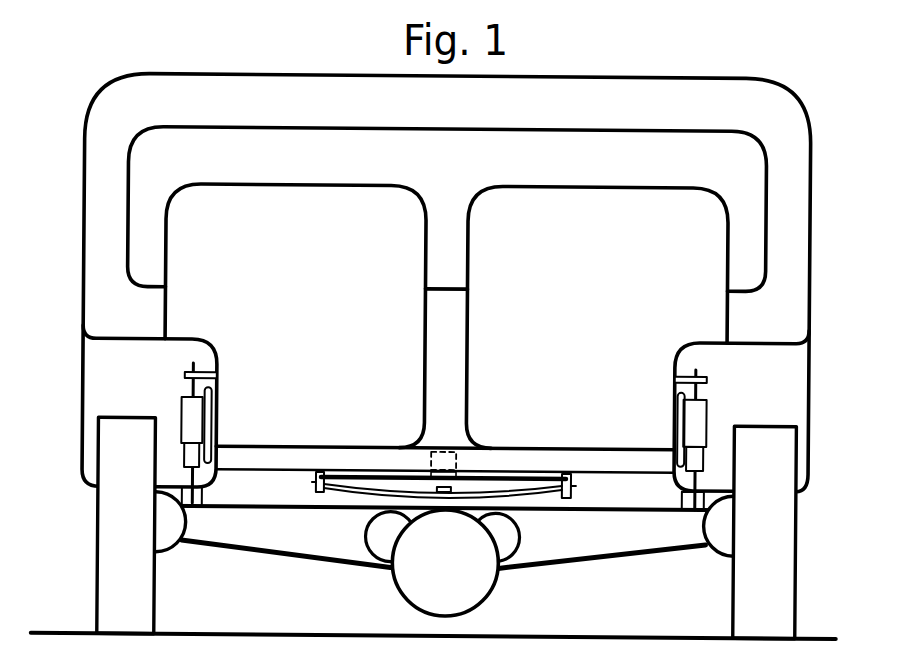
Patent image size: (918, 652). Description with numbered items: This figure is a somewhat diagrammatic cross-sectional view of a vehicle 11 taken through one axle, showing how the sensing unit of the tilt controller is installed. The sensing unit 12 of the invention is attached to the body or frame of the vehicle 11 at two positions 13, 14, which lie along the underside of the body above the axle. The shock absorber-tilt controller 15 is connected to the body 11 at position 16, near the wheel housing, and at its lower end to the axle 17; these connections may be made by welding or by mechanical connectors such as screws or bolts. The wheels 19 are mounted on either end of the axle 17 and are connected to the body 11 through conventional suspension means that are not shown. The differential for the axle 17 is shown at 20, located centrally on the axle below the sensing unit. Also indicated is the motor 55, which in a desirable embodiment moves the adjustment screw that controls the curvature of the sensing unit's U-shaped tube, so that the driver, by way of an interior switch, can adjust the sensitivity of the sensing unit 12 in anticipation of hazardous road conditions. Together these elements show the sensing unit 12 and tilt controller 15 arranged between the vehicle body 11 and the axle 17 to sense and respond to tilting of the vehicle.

The vehicle 11 is at (503, 463).
The sensing unit 12 is at (530, 485).
The position 13 is at (327, 474).
The position 14 is at (536, 479).
The shock absorber-tilt controller 15 is at (182, 413).
The position 16 is at (210, 359).
The axle 17 is at (333, 544).
The wheels 19 is at (112, 589).
The differential 20 is at (446, 562).
The motor 55 is at (463, 470).